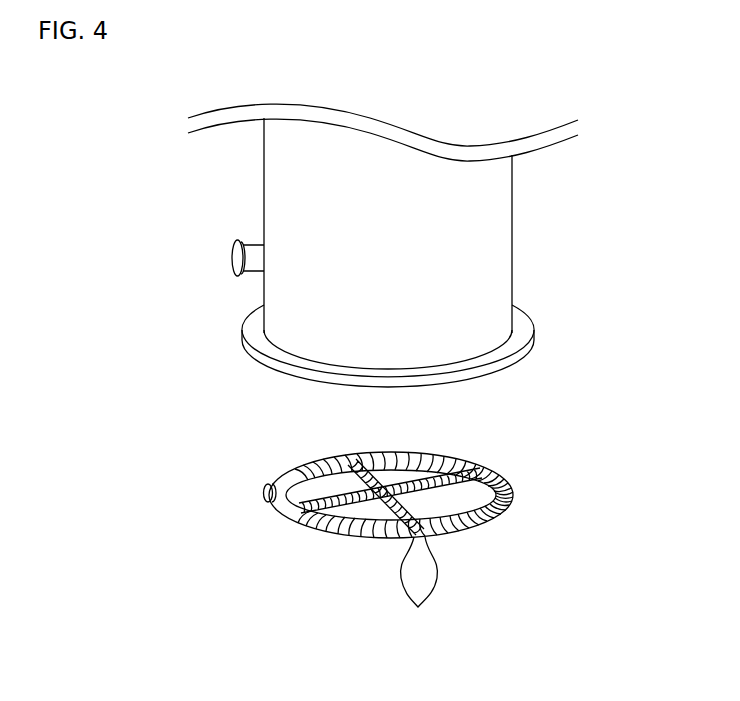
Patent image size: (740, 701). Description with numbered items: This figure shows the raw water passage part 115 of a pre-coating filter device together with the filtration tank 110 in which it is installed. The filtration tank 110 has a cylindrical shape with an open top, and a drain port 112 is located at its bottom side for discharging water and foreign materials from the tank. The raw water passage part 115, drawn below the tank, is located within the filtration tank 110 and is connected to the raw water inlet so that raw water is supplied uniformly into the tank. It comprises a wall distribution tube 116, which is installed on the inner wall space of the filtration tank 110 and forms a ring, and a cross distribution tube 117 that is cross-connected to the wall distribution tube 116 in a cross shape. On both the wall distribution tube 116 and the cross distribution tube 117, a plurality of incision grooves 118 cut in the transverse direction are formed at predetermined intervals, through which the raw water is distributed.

The filtration tank 110 is at (487, 245).
The drain port 112 is at (232, 258).
The raw water passage part 115 is at (406, 548).
The wall distribution tube 116 is at (497, 483).
The cross distribution tube 117 is at (300, 466).
The incision grooves 118 is at (420, 589).